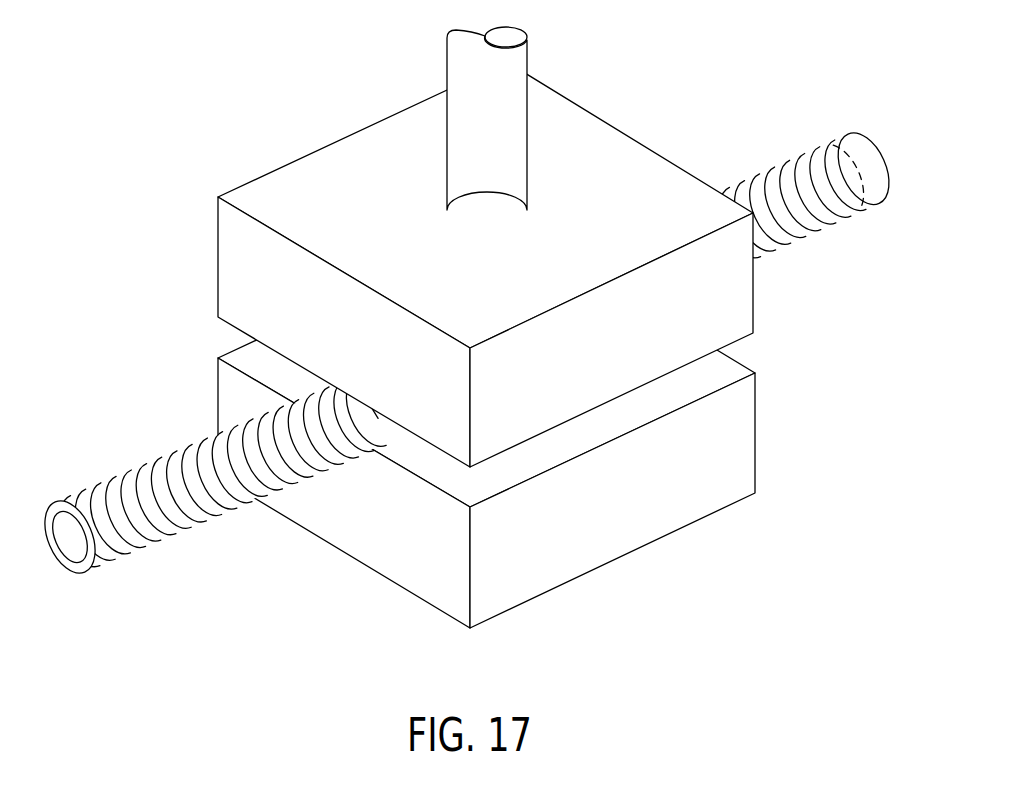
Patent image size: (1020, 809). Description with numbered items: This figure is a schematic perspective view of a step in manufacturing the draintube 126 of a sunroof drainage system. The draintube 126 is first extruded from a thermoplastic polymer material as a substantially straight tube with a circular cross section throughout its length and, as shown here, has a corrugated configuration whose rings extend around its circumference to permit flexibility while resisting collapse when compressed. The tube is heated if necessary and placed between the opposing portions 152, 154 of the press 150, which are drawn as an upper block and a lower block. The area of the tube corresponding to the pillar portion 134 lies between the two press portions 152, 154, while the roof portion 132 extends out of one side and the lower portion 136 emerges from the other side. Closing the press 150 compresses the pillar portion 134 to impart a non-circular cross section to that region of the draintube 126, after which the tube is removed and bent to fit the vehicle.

The draintube 126 is at (87, 585).
The roof portion 132 is at (225, 513).
The pillar portion 134 is at (362, 414).
The lower portion 136 is at (830, 207).
The press 150 is at (470, 339).
The opposing portion of press 152 is at (733, 288).
The opposing portion of press 154 is at (662, 513).